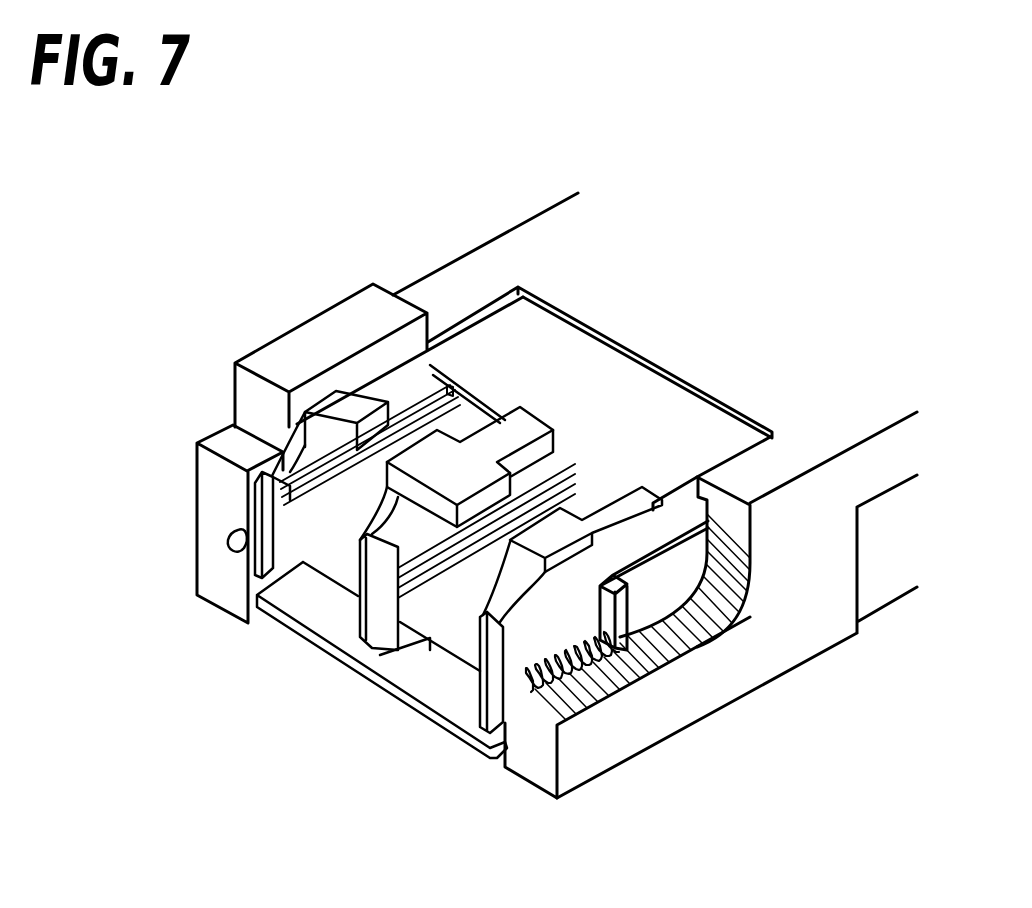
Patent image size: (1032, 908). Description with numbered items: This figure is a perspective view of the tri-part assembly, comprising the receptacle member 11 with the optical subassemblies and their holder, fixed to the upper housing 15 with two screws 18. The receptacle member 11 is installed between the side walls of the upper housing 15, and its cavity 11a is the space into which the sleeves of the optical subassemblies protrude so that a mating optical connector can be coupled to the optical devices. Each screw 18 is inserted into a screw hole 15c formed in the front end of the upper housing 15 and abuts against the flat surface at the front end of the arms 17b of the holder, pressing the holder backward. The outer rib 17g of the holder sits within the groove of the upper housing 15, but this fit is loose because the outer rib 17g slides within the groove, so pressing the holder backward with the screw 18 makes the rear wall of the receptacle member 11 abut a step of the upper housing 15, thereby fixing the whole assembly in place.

The receptacle member 11 is at (563, 350).
The cavity 11a is at (335, 608).
The upper housing 15 is at (805, 630).
The screw hole 15c is at (227, 555).
The arm 17b is at (663, 597).
The outer rib 17g is at (597, 633).
The screw 18 is at (483, 730).